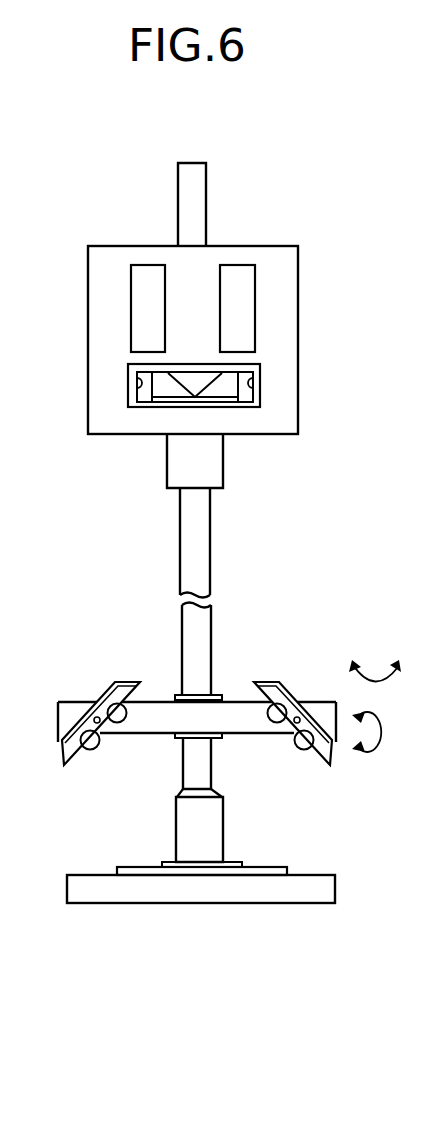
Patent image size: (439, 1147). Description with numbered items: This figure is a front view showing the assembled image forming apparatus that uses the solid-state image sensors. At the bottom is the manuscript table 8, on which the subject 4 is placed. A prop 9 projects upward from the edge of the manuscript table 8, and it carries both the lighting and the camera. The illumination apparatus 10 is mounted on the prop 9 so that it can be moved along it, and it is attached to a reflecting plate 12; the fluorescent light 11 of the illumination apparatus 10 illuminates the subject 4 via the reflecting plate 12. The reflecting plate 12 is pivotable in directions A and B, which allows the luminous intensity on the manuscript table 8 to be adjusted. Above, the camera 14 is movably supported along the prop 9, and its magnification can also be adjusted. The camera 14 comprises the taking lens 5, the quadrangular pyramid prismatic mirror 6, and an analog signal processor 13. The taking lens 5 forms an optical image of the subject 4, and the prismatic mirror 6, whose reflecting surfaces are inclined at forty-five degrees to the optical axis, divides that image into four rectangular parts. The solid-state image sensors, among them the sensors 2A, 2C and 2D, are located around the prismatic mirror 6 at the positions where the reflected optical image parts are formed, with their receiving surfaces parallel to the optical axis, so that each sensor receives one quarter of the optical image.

The camera 14 is at (278, 290).
The analog signal processor 13 is at (147, 276).
The solid-state image sensor 2A is at (145, 386).
The solid-state image sensor 2C is at (224, 386).
The solid-state image sensor 2D is at (250, 390).
The prismatic mirror 6 is at (187, 381).
The taking lens 5 is at (202, 477).
The prop 9 is at (198, 555).
The illumination apparatus 10 is at (270, 692).
The reflecting plate 12 is at (97, 700).
The fluorescent light 11 is at (123, 723).
The subject 4 is at (277, 868).
The manuscript table 8 is at (263, 888).
The pivot direction A is at (378, 732).
The pivot direction B is at (383, 672).